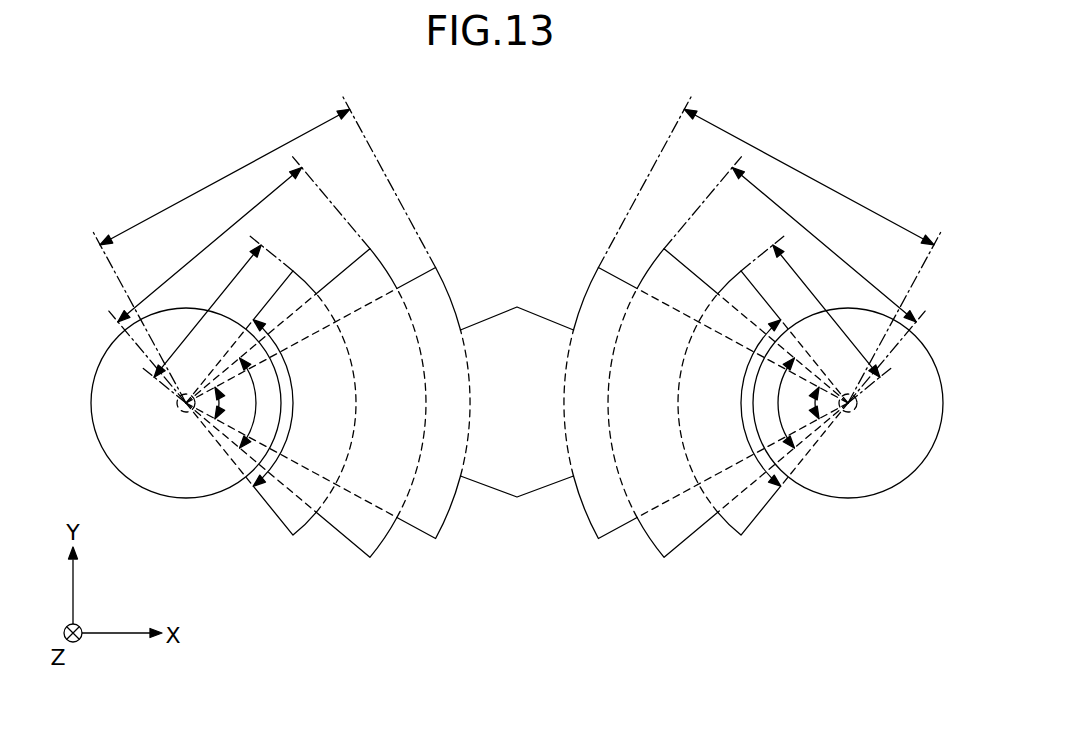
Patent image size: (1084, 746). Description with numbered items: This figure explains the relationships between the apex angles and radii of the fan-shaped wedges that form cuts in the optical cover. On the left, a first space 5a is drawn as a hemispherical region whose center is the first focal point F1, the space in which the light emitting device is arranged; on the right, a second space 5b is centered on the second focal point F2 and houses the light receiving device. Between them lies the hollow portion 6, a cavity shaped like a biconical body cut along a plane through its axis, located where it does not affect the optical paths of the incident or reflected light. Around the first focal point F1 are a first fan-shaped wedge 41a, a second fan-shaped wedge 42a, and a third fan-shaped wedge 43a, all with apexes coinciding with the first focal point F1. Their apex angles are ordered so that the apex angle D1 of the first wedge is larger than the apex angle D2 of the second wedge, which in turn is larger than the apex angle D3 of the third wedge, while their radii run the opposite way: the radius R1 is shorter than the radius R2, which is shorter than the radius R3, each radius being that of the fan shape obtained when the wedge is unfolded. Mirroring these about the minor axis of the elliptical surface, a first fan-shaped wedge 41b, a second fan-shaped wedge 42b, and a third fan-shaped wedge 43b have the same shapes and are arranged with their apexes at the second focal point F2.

The first fan-shaped wedge 41a is at (292, 512).
The second fan-shaped wedge 42a is at (363, 520).
The third fan-shaped wedge 43a is at (418, 515).
The first fan-shaped wedge 41b is at (742, 512).
The second fan-shaped wedge 42b is at (671, 520).
The third fan-shaped wedge 43b is at (616, 515).
The first space 5a is at (185, 480).
The second space 5b is at (850, 480).
The hollow portion 6 is at (535, 333).
The first focal point F1 is at (186, 403).
The second focal point F2 is at (848, 403).
The radius of the first fan-shaped wedge R1 is at (516, 319).
The radius of the second fan-shaped wedge R2 is at (517, 280).
The radius of the third fan-shaped wedge R3 is at (516, 250).
The apex angle of the first fan-shaped wedge D1 is at (516, 403).
The apex angle of the second fan-shaped wedge D2 is at (517, 403).
The apex angle of the third fan-shaped wedge D3 is at (517, 402).